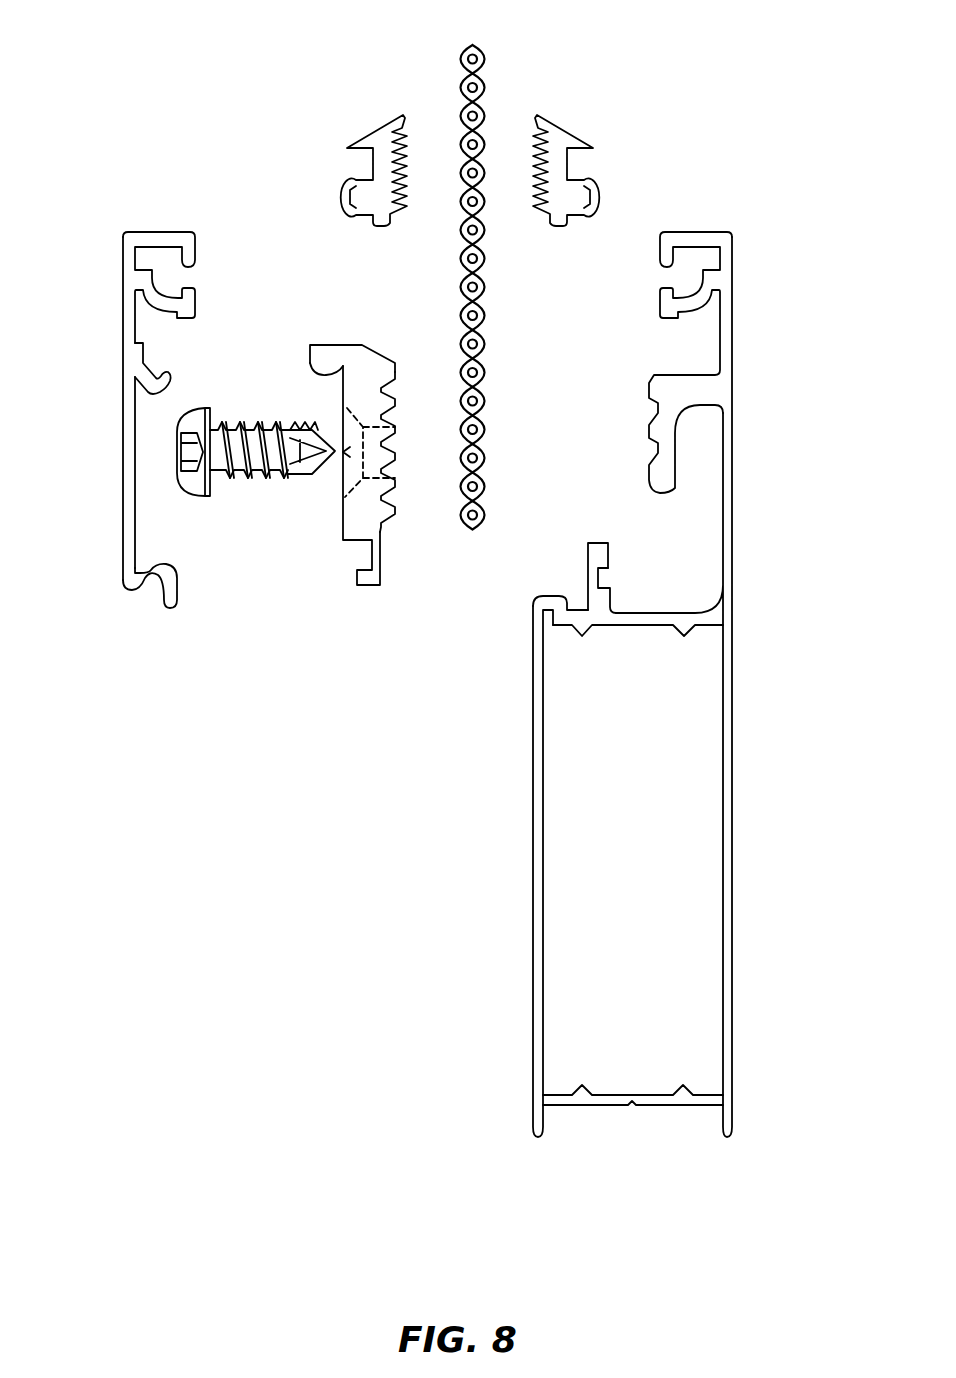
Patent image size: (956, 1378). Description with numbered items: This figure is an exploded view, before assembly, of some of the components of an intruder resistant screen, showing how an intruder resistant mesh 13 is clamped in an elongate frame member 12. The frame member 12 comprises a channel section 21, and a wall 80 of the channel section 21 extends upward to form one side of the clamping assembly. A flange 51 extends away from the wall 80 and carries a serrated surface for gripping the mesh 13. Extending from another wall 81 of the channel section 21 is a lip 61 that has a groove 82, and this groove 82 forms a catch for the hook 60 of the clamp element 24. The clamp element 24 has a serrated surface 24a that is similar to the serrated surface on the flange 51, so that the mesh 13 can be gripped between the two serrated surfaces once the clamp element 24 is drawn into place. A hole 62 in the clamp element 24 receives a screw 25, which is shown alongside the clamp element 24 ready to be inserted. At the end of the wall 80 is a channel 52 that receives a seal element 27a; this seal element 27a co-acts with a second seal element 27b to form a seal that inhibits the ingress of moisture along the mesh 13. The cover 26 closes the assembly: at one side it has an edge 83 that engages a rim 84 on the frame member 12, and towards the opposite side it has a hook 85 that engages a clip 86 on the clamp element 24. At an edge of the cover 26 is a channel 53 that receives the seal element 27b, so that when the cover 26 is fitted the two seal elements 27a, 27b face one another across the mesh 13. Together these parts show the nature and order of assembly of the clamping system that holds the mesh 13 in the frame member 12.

The elongate frame member 12 is at (533, 1003).
The intruder resistant mesh 13 is at (467, 52).
The channel section 21 is at (642, 869).
The clamp element 24 is at (340, 345).
The serrated surface 24a is at (398, 383).
The screw 25 is at (200, 495).
The cover 26 is at (148, 429).
The seal element 27a is at (568, 124).
The seal element 27b is at (376, 124).
The flange 51 is at (697, 390).
The channel 52 is at (713, 247).
The channel 53 is at (142, 247).
The hook 60 is at (345, 464).
The lip 61 is at (588, 555).
The hole 62 is at (338, 477).
The wall 80 is at (640, 660).
The wall 81 is at (635, 627).
The groove 82 is at (600, 586).
The edge 83 is at (171, 609).
The rim 84 is at (568, 595).
The hook 85 is at (170, 380).
The clip 86 is at (340, 390).